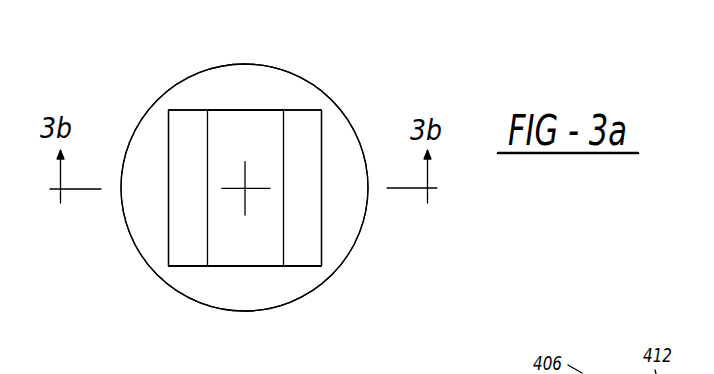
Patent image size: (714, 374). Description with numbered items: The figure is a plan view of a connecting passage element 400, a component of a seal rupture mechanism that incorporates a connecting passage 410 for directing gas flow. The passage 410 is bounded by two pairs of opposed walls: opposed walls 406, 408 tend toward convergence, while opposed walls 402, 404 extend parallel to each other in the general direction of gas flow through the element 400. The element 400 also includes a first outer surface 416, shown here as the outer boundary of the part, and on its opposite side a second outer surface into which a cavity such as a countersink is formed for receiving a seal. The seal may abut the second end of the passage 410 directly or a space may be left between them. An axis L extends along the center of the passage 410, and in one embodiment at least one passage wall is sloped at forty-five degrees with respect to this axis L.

The connecting passage element 400 is at (415, 34).
The opposed wall 402 is at (190, 108).
The opposed wall 404 is at (255, 266).
The opposed wall 406 is at (188, 178).
The opposed wall 408 is at (302, 143).
The connecting passage 410 is at (255, 130).
The first outer surface 416 is at (347, 191).
The axis L is at (245, 188).